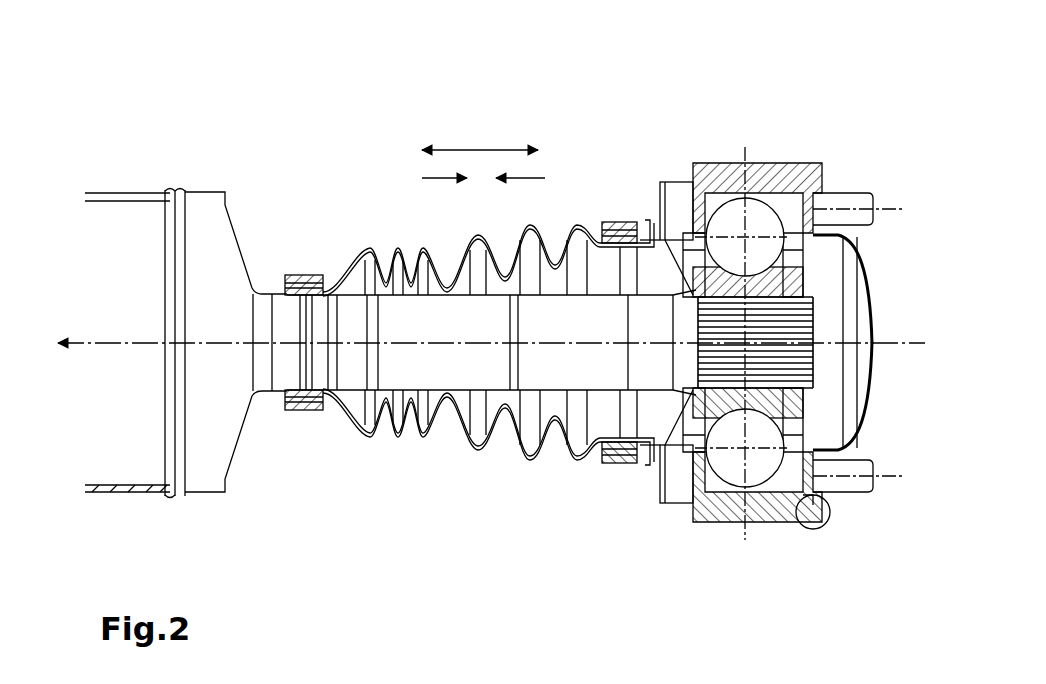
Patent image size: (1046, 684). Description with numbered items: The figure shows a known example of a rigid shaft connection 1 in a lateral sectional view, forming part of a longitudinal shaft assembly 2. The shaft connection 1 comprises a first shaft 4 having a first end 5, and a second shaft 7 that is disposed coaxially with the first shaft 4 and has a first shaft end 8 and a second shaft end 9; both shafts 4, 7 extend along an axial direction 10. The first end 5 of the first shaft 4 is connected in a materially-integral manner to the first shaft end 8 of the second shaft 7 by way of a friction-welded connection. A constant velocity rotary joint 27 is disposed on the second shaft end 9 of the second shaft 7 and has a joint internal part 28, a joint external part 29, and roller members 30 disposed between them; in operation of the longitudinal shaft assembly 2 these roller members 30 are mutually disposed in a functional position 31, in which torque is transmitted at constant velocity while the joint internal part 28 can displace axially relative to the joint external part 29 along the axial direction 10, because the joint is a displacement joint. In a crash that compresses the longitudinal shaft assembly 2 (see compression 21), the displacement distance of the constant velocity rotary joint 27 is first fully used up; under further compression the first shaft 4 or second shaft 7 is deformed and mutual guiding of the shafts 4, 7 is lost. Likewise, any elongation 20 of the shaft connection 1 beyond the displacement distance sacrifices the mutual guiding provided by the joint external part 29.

The shaft connection 1 is at (674, 93).
The longitudinal shaft assembly 2 is at (352, 126).
The first shaft 4 is at (120, 200).
The first end 5 is at (175, 190).
The second shaft 7 is at (323, 275).
The first shaft end 8 is at (197, 197).
The second shaft end 9 is at (813, 370).
The axial direction 10 is at (491, 360).
The elongation 20 is at (480, 137).
The compression 21 is at (483, 193).
The constant velocity rotary joint 27 is at (781, 325).
The joint internal part 28 is at (805, 295).
The joint external part 29 is at (822, 166).
The roller members 30 is at (784, 238).
The functional position 31 is at (678, 475).